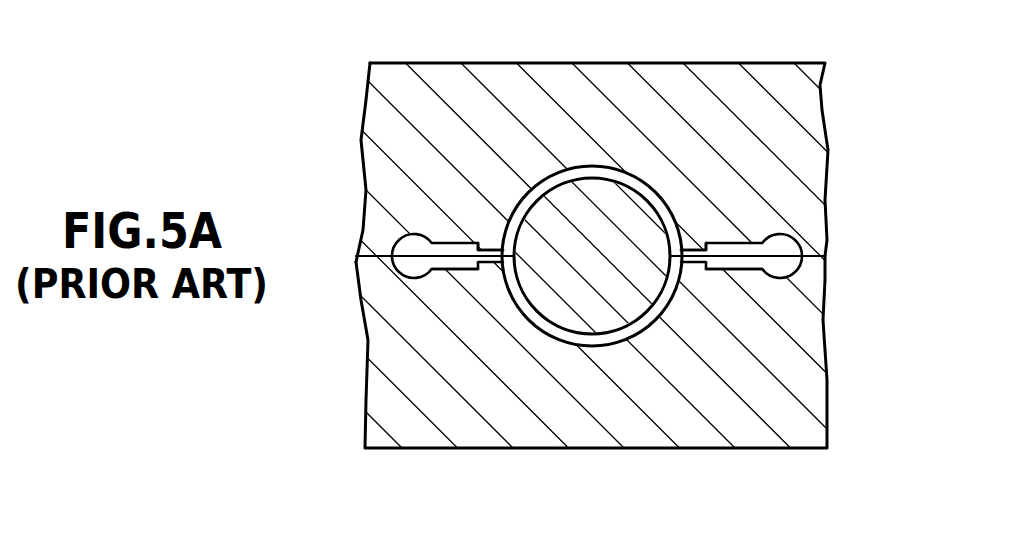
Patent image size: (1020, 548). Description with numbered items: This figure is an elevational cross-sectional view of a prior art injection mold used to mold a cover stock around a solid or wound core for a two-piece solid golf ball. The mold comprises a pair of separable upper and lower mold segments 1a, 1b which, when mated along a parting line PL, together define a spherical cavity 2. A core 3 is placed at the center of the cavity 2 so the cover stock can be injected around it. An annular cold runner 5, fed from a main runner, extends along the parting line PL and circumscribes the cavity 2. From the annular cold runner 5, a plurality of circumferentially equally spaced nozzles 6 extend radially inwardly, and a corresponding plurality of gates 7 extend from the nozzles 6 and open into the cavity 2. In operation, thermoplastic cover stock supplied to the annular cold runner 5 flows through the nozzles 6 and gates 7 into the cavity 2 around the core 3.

The upper mold segment 1a is at (618, 85).
The lower mold segment 1b is at (792, 420).
The spherical cavity 2 is at (633, 330).
The core 3 is at (580, 316).
The annular cold runner 5 is at (410, 246).
The nozzles 6 is at (375, 336).
The gates 7 is at (487, 238).
The parting line PL is at (384, 258).